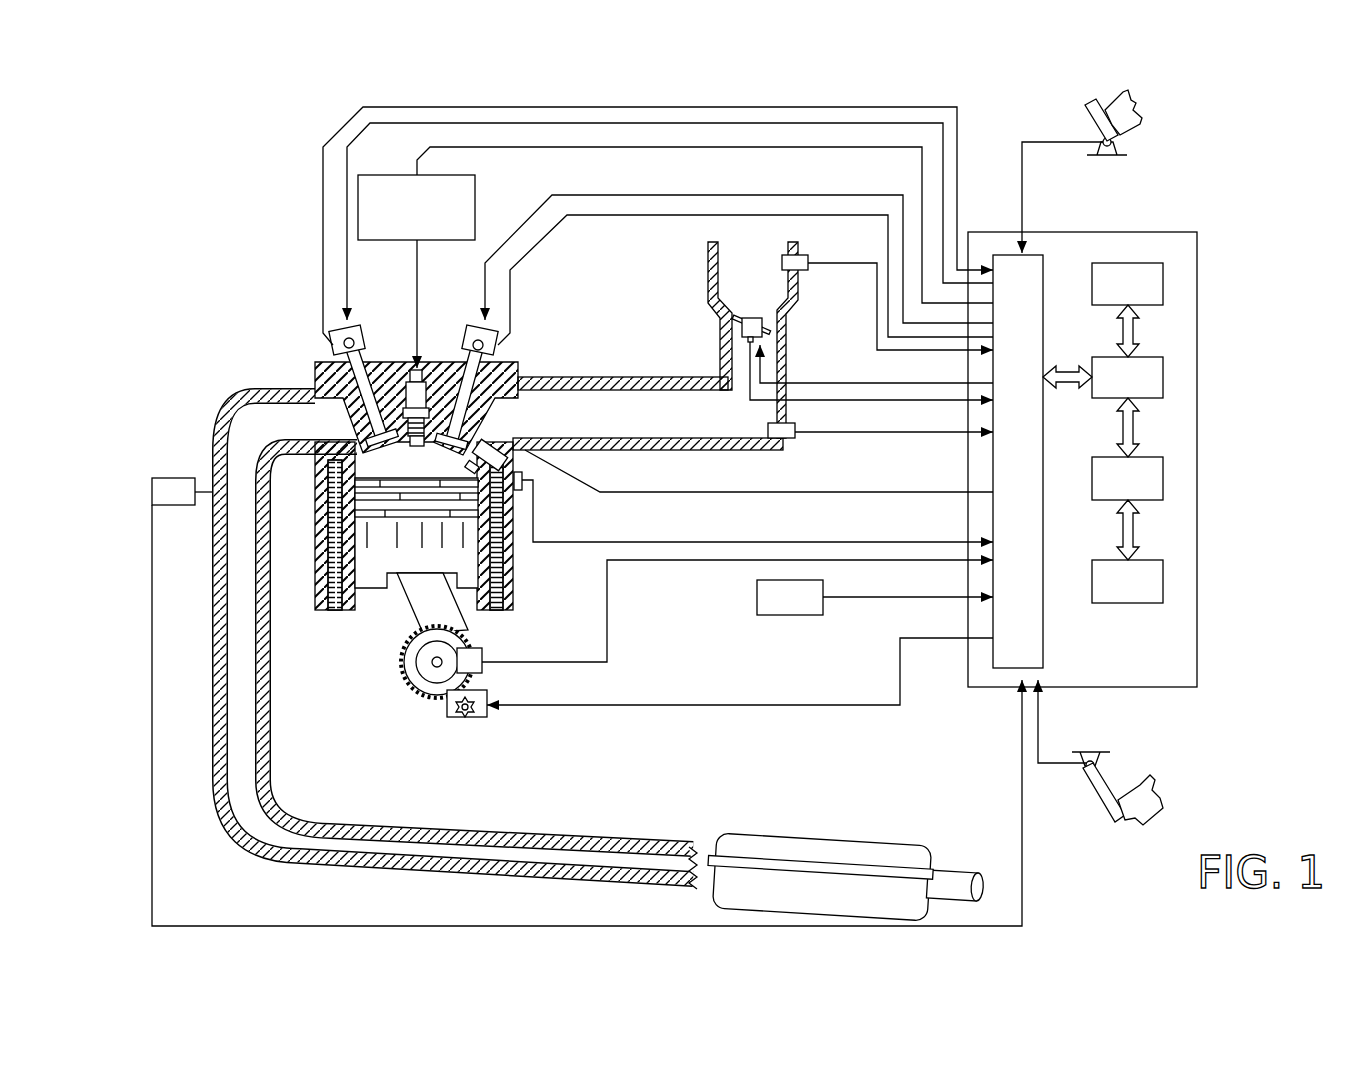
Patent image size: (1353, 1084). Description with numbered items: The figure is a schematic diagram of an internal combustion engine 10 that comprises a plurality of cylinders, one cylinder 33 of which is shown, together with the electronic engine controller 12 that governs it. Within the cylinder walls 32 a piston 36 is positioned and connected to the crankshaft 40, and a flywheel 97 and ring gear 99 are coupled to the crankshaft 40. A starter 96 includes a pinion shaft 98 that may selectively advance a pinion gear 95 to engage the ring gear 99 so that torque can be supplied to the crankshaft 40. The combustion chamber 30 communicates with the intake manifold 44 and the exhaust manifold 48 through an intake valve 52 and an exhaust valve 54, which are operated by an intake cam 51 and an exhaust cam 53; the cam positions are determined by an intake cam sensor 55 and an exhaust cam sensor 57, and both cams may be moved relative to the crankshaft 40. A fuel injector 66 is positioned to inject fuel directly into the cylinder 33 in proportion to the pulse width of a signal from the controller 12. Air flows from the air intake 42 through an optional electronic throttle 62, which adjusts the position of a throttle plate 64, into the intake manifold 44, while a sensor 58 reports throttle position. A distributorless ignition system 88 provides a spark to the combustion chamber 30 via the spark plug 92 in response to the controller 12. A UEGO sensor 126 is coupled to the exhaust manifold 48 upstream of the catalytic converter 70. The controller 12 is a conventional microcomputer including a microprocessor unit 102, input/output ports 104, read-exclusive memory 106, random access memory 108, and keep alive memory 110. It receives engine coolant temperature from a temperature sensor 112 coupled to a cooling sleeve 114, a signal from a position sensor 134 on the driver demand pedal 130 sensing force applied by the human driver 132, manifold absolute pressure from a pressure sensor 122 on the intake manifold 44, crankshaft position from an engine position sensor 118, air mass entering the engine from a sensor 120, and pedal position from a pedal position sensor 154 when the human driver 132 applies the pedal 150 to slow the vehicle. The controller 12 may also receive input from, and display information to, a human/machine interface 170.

The engine 10 is at (253, 310).
The electronic engine controller 12 is at (1129, 444).
The combustion chamber 30 is at (330, 550).
The cylinder walls 32 is at (447, 544).
The cylinder 33 is at (385, 600).
The piston 36 is at (399, 565).
The crankshaft 40 is at (414, 684).
The air intake 42 is at (831, 349).
The intake manifold 44 is at (702, 427).
The exhaust manifold 48 is at (298, 434).
The intake cam 51 is at (474, 323).
The intake valve 52 is at (489, 387).
The exhaust cam 53 is at (355, 323).
The exhaust valve 54 is at (336, 375).
The intake cam sensor 55 is at (490, 347).
The exhaust cam sensor 57 is at (333, 345).
The throttle position sensor 58 is at (735, 345).
The electronic throttle 62 is at (770, 325).
The throttle plate 64 is at (745, 325).
The fuel injector 66 is at (520, 450).
The catalytic converter 70 is at (735, 833).
The distributorless ignition system 88 is at (370, 176).
The spark plug 92 is at (421, 372).
The pinion gear 95 is at (476, 717).
The starter 96 is at (701, 704).
The flywheel 97 is at (412, 655).
The pinion shaft 98 is at (463, 710).
The ring gear 99 is at (435, 697).
The microprocessor unit 102 is at (1163, 378).
The input/output ports 104 is at (1043, 262).
The read-exclusive memory 106 is at (1163, 283).
The random access memory 108 is at (1163, 480).
The keep alive memory 110 is at (1163, 582).
The temperature sensor 112 is at (525, 485).
The cooling sleeve 114 is at (507, 565).
The engine position sensor 118 is at (483, 652).
The air mass sensor 120 is at (800, 256).
The pressure sensor 122 is at (795, 440).
The Universal Exhaust Gas Oxygen sensor 126 is at (152, 492).
The driver demand pedal 130 is at (1142, 161).
The human driver 132 is at (1135, 103).
The position sensor 134 is at (1120, 142).
The pedal 150 is at (1100, 761).
The pedal position sensor 154 is at (1082, 764).
The human/machine interface 170 is at (809, 608).